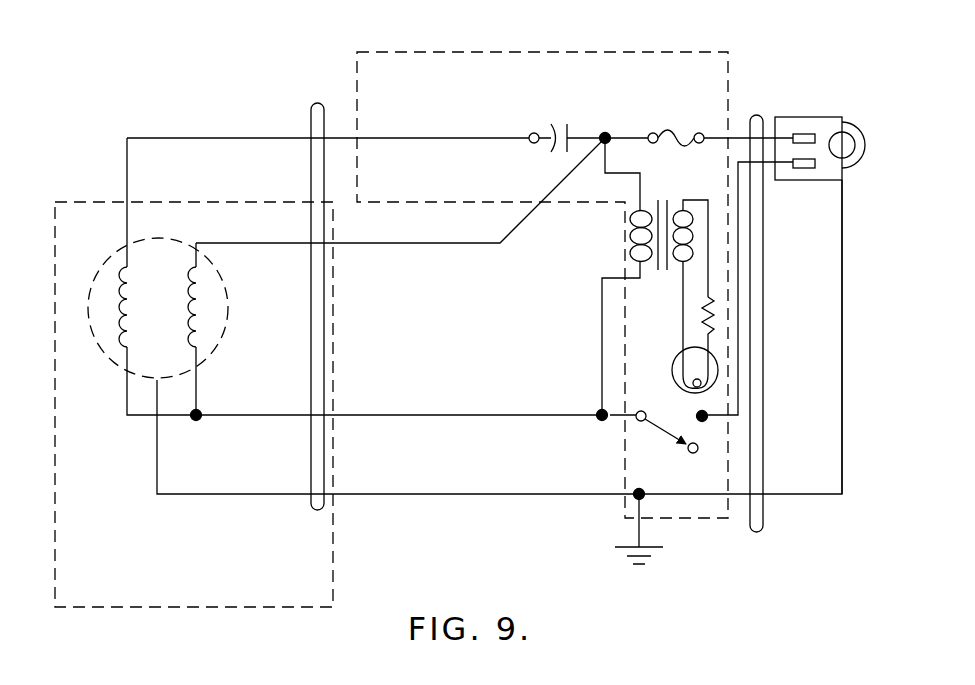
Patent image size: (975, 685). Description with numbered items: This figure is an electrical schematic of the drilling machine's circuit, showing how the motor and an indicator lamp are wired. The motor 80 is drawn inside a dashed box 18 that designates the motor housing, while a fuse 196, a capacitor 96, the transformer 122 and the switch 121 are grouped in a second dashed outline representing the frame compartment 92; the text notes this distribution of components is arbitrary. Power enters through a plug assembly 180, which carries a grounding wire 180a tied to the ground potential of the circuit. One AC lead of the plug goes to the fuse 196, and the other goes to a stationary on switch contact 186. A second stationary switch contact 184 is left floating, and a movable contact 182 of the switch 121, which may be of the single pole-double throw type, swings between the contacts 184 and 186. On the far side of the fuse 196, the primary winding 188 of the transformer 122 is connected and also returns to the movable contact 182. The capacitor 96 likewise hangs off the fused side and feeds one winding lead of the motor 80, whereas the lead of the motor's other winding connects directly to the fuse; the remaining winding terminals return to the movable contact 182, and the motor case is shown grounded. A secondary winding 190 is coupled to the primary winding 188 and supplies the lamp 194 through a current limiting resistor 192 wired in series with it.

The dashed box 18 is at (222, 607).
The motor 80 is at (222, 330).
The frame compartment 92 is at (357, 52).
The capacitor 96 is at (573, 125).
The switch 121 is at (658, 446).
The transformer 122 is at (658, 277).
The plug assembly 180 is at (797, 130).
The grounding wire 180a is at (842, 420).
The movable contact 182 is at (662, 432).
The stationary switch contact 184 is at (680, 463).
The stationary on switch contact 186 is at (697, 415).
The primary winding 188 is at (635, 234).
The secondary winding 190 is at (692, 230).
The current limiting resistor 192 is at (710, 320).
The indicator lamp 194 is at (677, 377).
The fuse 196 is at (683, 123).